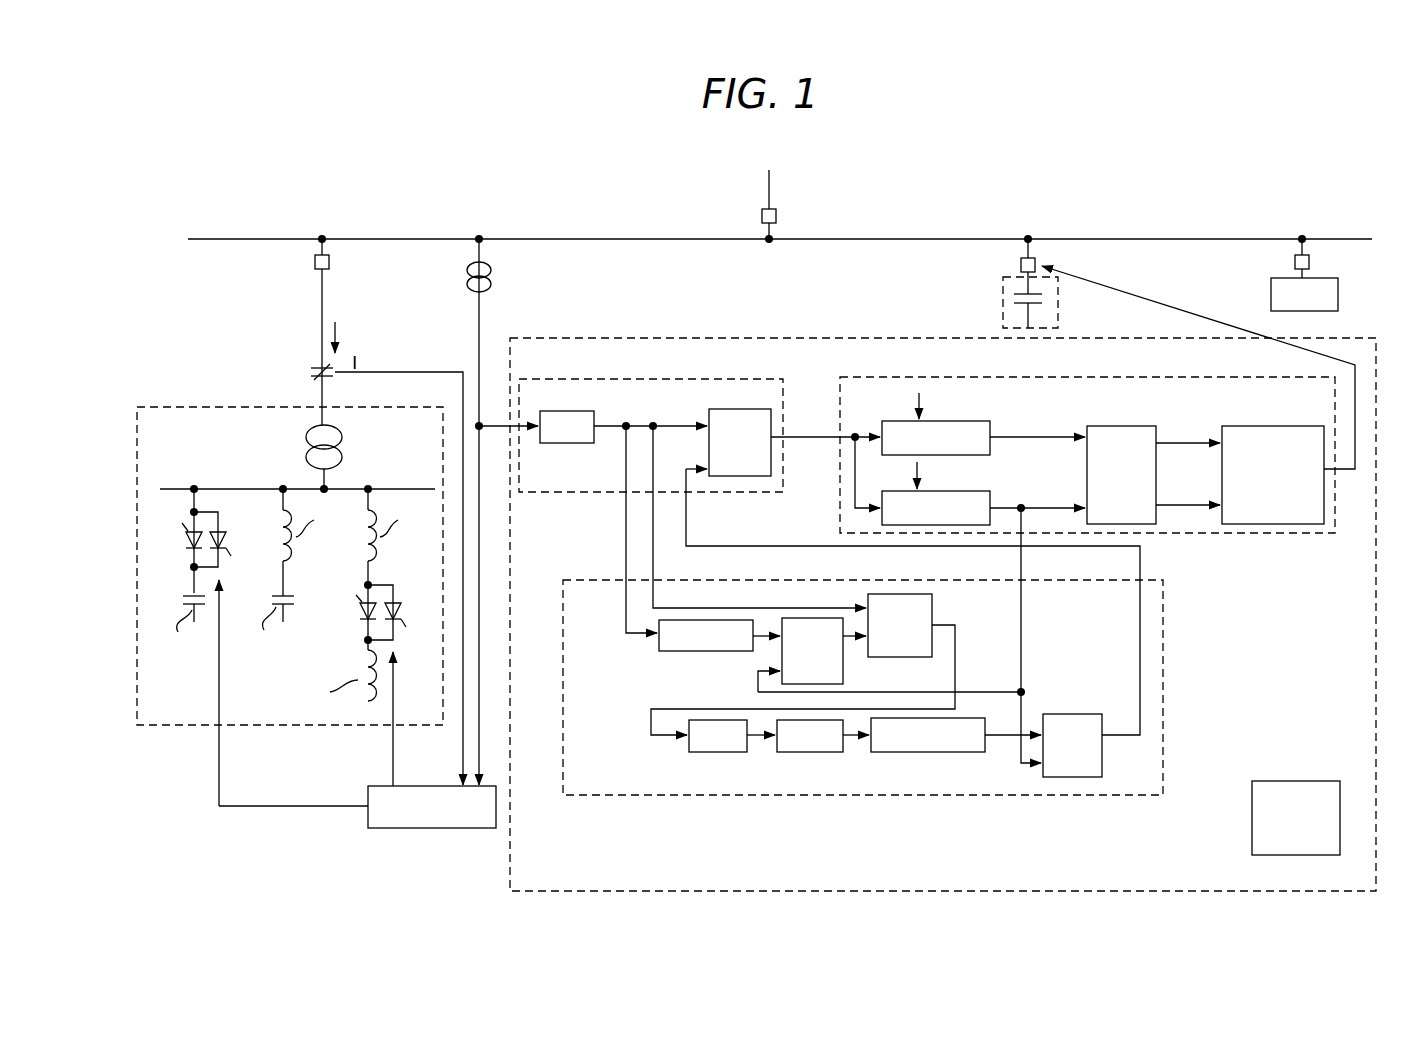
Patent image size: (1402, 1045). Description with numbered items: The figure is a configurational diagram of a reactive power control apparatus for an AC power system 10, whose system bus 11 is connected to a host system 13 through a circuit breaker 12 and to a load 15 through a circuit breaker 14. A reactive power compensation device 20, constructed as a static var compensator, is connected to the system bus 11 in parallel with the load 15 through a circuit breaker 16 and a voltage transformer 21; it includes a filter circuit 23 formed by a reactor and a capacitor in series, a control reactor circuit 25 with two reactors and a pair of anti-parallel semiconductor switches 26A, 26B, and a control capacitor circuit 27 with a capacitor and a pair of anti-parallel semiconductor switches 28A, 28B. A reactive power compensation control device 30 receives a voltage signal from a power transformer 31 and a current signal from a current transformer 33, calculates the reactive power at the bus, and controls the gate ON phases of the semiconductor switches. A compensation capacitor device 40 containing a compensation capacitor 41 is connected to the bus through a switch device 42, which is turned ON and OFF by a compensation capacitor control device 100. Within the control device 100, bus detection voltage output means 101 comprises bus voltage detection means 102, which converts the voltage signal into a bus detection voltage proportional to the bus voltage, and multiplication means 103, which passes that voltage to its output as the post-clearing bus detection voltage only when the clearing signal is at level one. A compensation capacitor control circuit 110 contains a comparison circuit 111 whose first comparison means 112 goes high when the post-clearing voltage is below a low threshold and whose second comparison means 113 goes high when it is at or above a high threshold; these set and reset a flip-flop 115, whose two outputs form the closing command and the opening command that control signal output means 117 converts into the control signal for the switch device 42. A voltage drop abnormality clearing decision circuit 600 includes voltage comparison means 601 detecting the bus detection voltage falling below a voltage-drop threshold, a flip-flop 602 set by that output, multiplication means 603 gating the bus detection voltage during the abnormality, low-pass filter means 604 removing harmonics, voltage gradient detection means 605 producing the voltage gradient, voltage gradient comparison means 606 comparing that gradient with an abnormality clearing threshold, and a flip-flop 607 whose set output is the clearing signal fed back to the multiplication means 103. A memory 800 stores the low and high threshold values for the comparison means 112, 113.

The AC power system 10 is at (955, 226).
The system bus 11 is at (605, 238).
The circuit breaker 12 is at (778, 216).
The host system 13 is at (772, 185).
The circuit breaker 14 is at (1312, 262).
The load 15 is at (1340, 296).
The circuit breaker 16 is at (330, 262).
The reactive power compensation device 20 is at (193, 398).
The voltage transformer 21 is at (342, 436).
The filter circuit 23 is at (295, 560).
The control reactor circuit 25 is at (376, 572).
The semiconductor switch 26A is at (402, 615).
The semiconductor switch 26B is at (362, 622).
The control capacitor circuit 27 is at (188, 572).
The semiconductor switch 28A is at (232, 545).
The semiconductor switch 28B is at (188, 540).
The reactive power compensation control device 30 is at (433, 829).
The power transformer 31 is at (493, 272).
The current transformer 33 is at (308, 372).
The compensation capacitor device 40 is at (996, 318).
The compensation capacitor 41 is at (1010, 298).
The switch device 42 is at (1018, 264).
The compensation capacitor control device 100 is at (702, 334).
The bus detection voltage output means 101 is at (655, 376).
The bus voltage detection means 102 is at (562, 445).
The multiplication means 103 is at (722, 409).
The compensation capacitor control circuit 110 is at (1162, 376).
The comparison circuit 111 is at (1000, 428).
The first comparison means 112 is at (895, 420).
The second comparison means 113 is at (975, 490).
The flip-flop 115 is at (1117, 426).
The control signal output means 117 is at (1277, 426).
The voltage drop abnormality clearing decision circuit 600 is at (1163, 675).
The voltage comparison means 601 is at (695, 652).
The flip-flop 602 is at (843, 672).
The multiplication means 603 is at (932, 600).
The low-pass filter means 604 is at (718, 753).
The voltage gradient detection means 605 is at (810, 753).
The voltage gradient comparison means 606 is at (925, 753).
The flip-flop 607 is at (1083, 714).
The memory 800 is at (1297, 780).